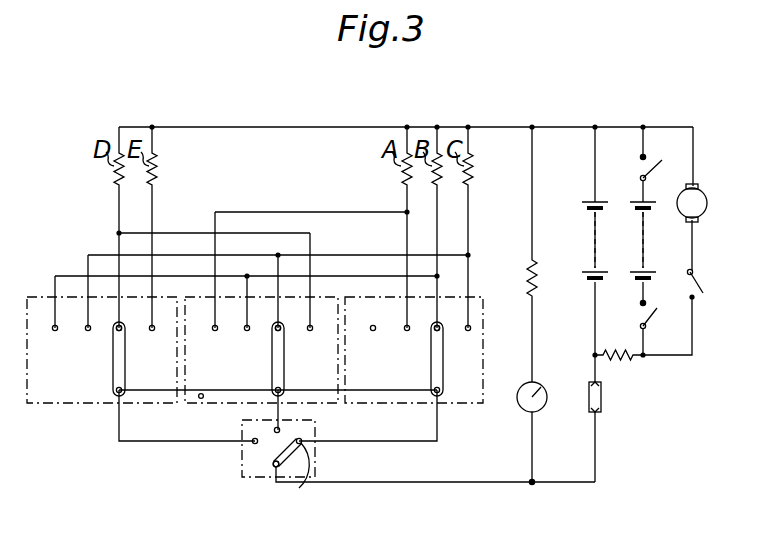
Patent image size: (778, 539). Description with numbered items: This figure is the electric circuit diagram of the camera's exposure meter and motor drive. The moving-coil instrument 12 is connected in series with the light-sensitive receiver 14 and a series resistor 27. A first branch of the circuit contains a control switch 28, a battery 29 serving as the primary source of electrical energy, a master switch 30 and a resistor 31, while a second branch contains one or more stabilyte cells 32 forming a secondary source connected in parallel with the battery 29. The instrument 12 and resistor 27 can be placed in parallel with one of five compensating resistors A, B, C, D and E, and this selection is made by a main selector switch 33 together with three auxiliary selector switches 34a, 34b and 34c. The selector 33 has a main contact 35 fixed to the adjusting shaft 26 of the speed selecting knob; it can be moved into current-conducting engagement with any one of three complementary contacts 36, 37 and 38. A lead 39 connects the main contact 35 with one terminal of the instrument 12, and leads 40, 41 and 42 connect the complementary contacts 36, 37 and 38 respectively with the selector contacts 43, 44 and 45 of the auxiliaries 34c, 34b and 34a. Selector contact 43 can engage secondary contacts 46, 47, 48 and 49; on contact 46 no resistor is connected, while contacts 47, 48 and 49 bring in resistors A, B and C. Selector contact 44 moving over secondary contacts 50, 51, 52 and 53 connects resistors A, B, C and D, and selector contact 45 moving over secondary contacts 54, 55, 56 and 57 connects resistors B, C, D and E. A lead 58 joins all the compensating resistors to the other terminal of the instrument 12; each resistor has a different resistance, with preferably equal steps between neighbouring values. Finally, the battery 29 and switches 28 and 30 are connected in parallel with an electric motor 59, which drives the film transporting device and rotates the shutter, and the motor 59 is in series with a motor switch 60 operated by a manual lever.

The moving-coil instrument 12 is at (542, 387).
The light-sensitive receiver 14 is at (608, 404).
The adjusting shaft 26 is at (271, 479).
The series resistor 27 is at (526, 279).
The control switch 28 is at (656, 167).
The battery 29 is at (651, 203).
The master switch 30 is at (651, 327).
The resistor 31 is at (616, 350).
The stabilyte cells 32 is at (583, 200).
The main selector switch 33 is at (253, 478).
The auxiliary selector switch 34a is at (86, 403).
The auxiliary selector switch 34b is at (197, 405).
The auxiliary selector switch 34c is at (420, 405).
The main contact 35 is at (291, 478).
The complementary contact 36 is at (302, 443).
The complementary contact 37 is at (280, 430).
The complementary contact 38 is at (253, 443).
The lead 39 is at (460, 483).
The lead 40 is at (437, 420).
The lead 41 is at (277, 415).
The lead 42 is at (119, 413).
The selector contact 43 is at (431, 363).
The selector contact 44 is at (284, 350).
The selector contact 45 is at (125, 350).
The secondary contact 46 is at (370, 329).
The secondary contact 47 is at (403, 329).
The secondary contact 48 is at (434, 329).
The secondary contact 49 is at (465, 329).
The secondary contact 50 is at (212, 329).
The secondary contact 51 is at (244, 329).
The secondary contact 52 is at (275, 329).
The secondary contact 53 is at (307, 329).
The secondary contact 54 is at (53, 329).
The secondary contact 55 is at (85, 329).
The secondary contact 56 is at (116, 329).
The secondary contact 57 is at (149, 329).
The lead 58 is at (518, 127).
The electric motor 59 is at (680, 216).
The motor switch 60 is at (693, 289).